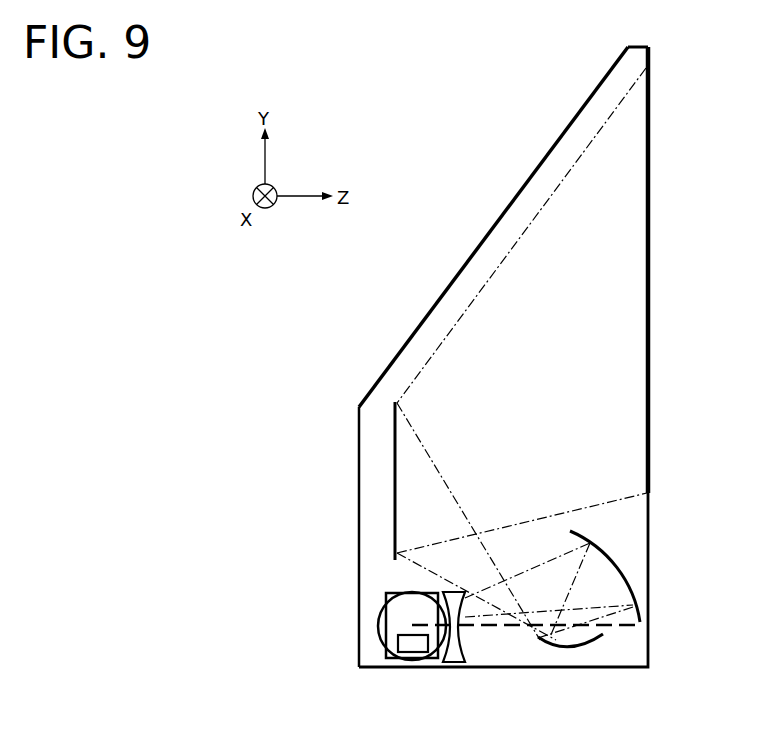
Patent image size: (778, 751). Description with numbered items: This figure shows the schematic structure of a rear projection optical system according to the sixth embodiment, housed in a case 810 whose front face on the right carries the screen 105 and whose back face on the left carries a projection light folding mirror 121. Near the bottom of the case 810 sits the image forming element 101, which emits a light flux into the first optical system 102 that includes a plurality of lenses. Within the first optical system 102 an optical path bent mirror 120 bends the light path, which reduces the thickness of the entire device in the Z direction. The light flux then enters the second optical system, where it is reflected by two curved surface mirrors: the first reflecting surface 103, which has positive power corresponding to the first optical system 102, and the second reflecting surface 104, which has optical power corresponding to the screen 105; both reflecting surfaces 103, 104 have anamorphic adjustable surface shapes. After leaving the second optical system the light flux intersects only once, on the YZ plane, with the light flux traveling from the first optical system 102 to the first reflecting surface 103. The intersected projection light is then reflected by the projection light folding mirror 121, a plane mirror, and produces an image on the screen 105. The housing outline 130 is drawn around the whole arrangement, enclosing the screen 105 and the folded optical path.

The housing 130 is at (443, 295).
The screen 105 is at (648, 450).
The case 810 is at (648, 640).
The projection light folding mirror 121 is at (393, 452).
The first reflecting surface 103 is at (628, 585).
The second reflecting surface 104 is at (567, 647).
The optical path bent mirror 120 is at (386, 595).
The image forming element 101 is at (398, 638).
The first optical system 102 is at (472, 670).